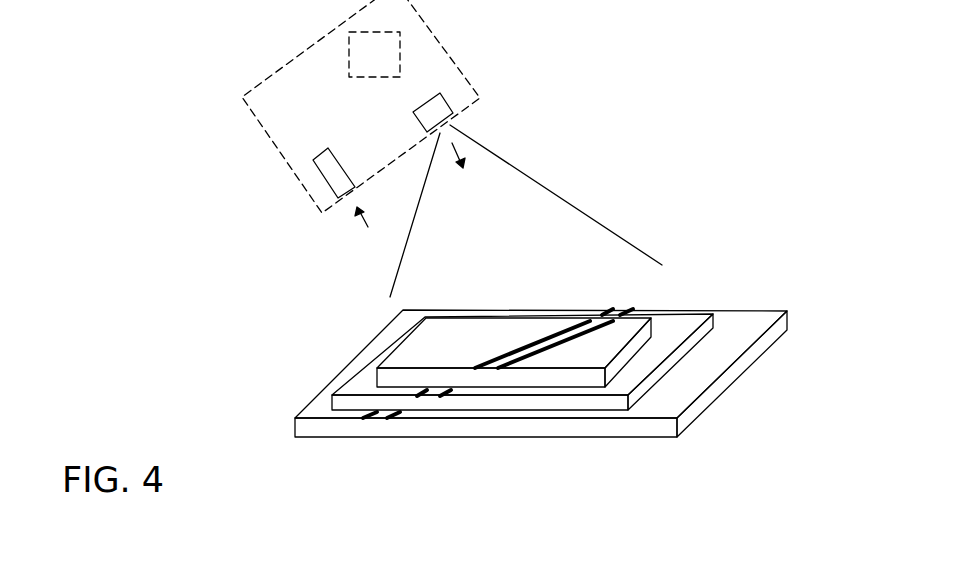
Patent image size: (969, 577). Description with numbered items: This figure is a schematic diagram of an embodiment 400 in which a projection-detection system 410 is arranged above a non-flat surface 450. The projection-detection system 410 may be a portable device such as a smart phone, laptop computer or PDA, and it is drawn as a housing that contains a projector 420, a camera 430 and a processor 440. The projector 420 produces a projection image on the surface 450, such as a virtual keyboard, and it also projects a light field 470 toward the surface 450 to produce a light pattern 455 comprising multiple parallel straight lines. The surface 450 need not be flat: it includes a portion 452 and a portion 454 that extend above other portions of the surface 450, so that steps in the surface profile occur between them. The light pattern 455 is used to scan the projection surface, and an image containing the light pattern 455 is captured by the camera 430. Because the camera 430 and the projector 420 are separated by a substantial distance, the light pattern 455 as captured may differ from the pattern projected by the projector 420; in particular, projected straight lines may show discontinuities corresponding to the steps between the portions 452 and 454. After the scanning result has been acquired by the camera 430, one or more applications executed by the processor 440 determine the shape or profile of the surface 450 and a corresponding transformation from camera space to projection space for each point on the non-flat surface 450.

The embodiment 400 is at (758, 86).
The projection-detection system 410 is at (265, 133).
The projector 420 is at (447, 103).
The camera 430 is at (325, 180).
The processor 440 is at (350, 40).
The non-flat surface 450 is at (513, 331).
The surface portion 452 is at (333, 385).
The surface portion 454 is at (408, 337).
The light pattern 455 is at (518, 346).
The light field 470 is at (522, 249).